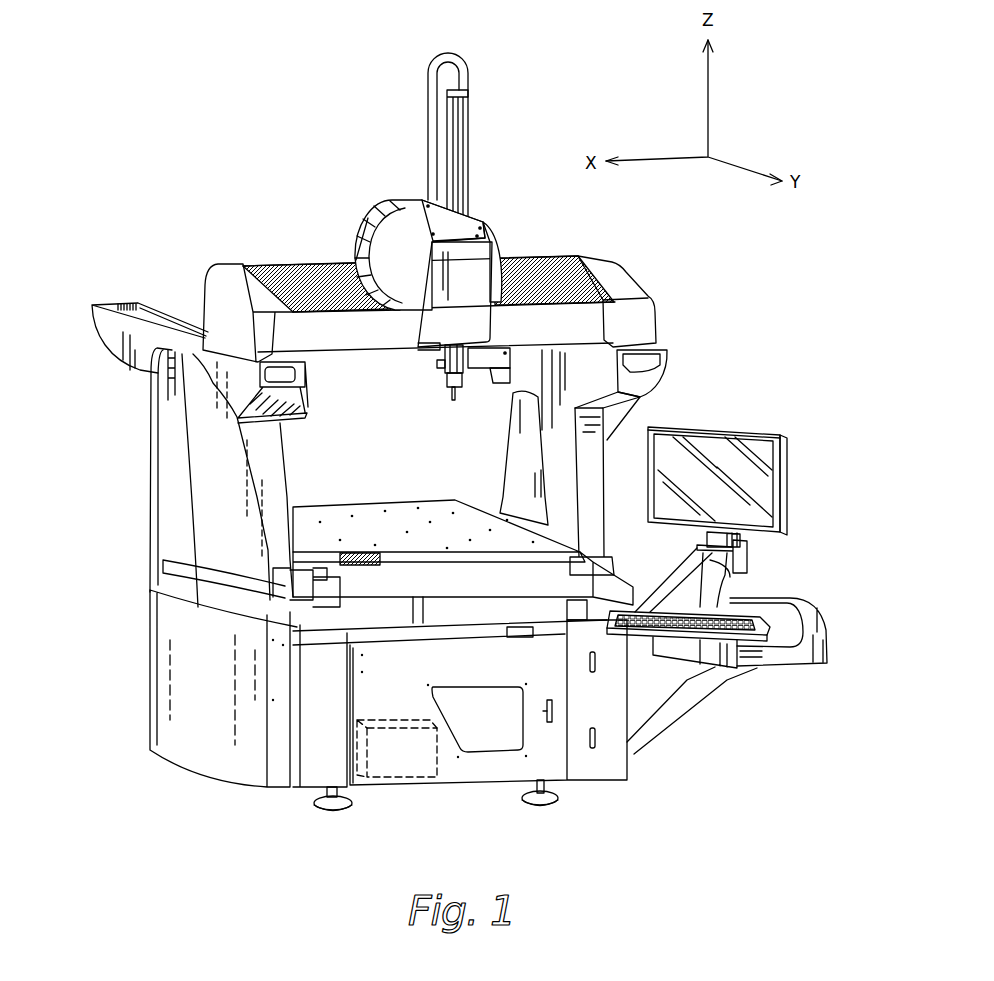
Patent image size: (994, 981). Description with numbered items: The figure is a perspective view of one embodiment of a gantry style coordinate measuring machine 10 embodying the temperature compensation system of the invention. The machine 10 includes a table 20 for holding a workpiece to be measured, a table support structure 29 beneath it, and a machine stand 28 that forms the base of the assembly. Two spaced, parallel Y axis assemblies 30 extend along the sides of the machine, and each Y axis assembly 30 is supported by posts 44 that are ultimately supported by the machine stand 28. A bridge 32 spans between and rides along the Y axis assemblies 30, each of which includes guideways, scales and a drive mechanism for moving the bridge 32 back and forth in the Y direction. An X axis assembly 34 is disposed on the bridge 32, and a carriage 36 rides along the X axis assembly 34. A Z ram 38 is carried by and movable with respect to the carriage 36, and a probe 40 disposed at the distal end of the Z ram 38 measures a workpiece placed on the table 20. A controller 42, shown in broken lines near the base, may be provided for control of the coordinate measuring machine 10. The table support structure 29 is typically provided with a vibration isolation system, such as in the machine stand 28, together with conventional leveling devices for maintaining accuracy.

The gantry style coordinate measuring machine 10 is at (319, 126).
The table 20 is at (368, 502).
The machine stand 28 is at (135, 630).
The table support structure 29 is at (363, 583).
The Y axis assembly 30 is at (121, 298).
The bridge 32 is at (529, 246).
The X axis assembly 34 is at (313, 323).
The carriage 36 is at (418, 200).
The Z ram 38 is at (486, 128).
The probe 40 is at (440, 388).
The controller 42 is at (393, 783).
The post 44 is at (152, 458).